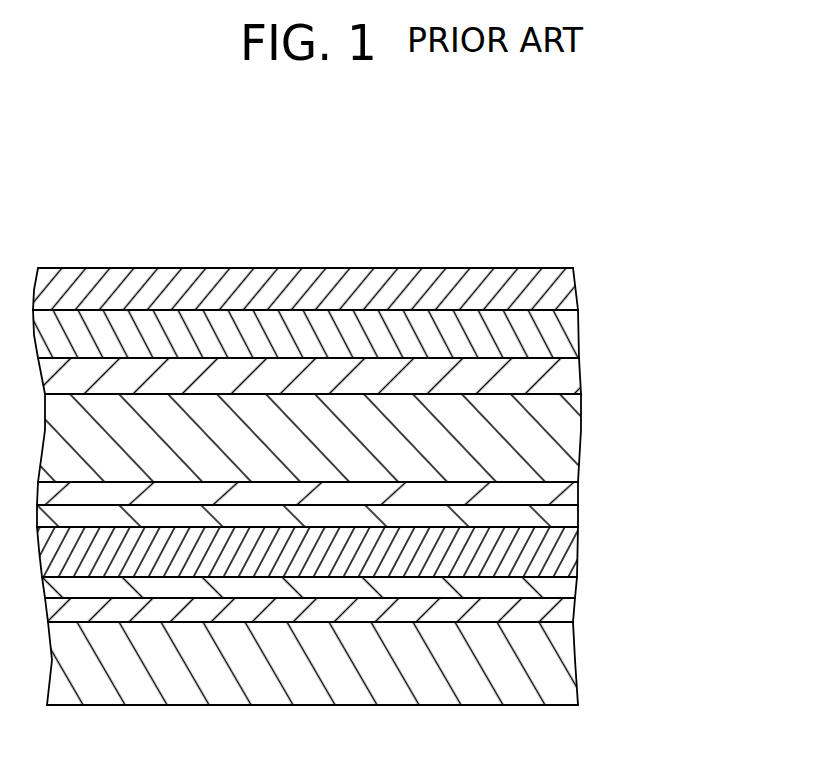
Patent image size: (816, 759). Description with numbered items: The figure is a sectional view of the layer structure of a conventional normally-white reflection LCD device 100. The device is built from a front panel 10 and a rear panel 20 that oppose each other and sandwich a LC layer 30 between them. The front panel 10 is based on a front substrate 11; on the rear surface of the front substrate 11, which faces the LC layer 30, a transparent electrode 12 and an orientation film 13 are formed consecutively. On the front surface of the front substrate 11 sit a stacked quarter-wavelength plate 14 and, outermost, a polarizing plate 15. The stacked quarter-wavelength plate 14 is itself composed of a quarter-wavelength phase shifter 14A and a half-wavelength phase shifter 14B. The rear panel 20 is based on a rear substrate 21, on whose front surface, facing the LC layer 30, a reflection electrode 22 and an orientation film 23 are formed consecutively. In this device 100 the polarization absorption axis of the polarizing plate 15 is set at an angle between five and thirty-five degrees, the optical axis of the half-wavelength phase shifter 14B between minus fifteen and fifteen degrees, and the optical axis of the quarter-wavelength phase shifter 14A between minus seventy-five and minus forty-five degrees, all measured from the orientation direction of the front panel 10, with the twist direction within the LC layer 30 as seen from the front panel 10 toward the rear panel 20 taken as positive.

The reflection LCD device 100 is at (420, 429).
The front panel 10 is at (420, 399).
The polarizing plate 15 is at (578, 281).
The stacked λ/4 plate 14 is at (393, 352).
The λ/2 phase shifter 14B is at (579, 330).
The λ/4 phase shifter 14A is at (580, 372).
The front substrate 11 is at (580, 433).
The transparent electrode 12 is at (578, 483).
The orientation film 13 is at (356, 519).
The LC layer 30 is at (577, 548).
The rear panel 20 is at (392, 639).
The orientation film 23 is at (577, 585).
The reflection electrode 22 is at (575, 612).
The rear substrate 21 is at (574, 648).